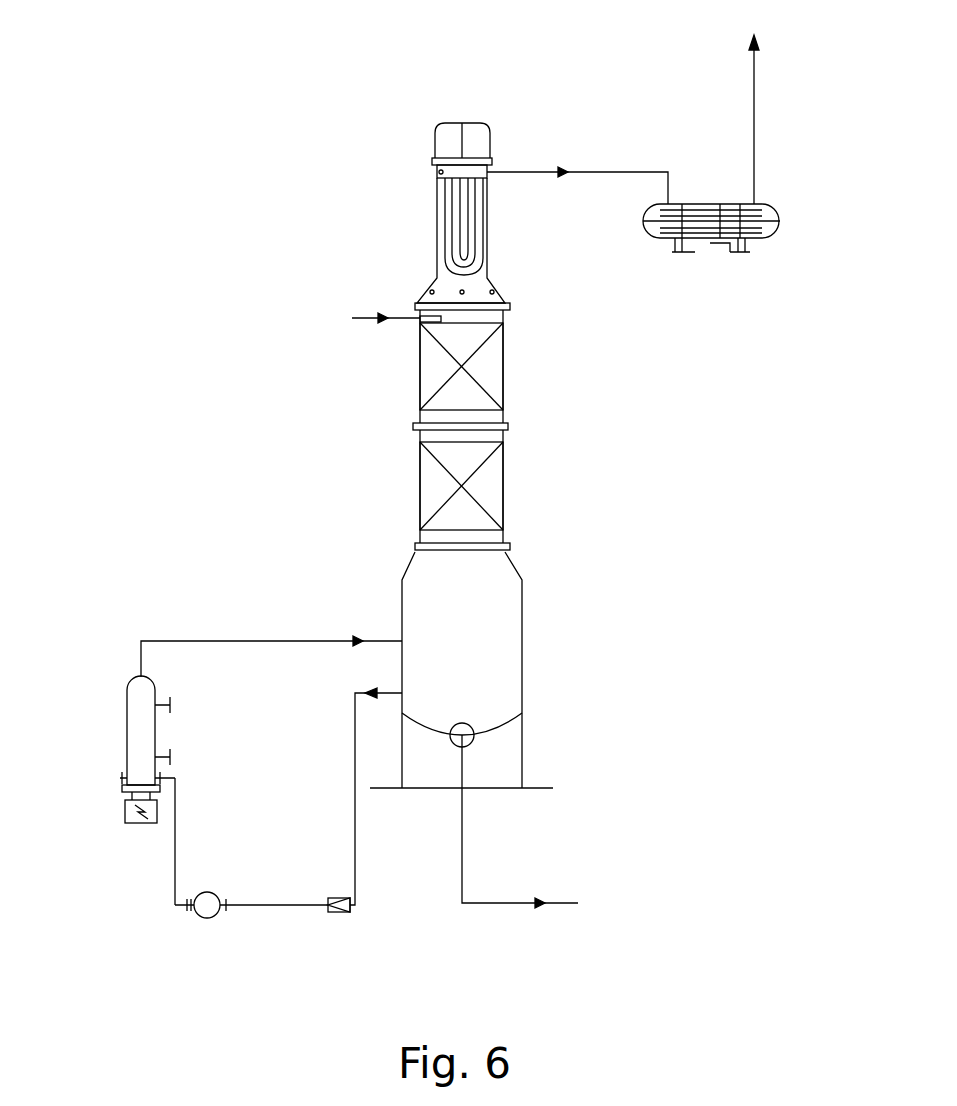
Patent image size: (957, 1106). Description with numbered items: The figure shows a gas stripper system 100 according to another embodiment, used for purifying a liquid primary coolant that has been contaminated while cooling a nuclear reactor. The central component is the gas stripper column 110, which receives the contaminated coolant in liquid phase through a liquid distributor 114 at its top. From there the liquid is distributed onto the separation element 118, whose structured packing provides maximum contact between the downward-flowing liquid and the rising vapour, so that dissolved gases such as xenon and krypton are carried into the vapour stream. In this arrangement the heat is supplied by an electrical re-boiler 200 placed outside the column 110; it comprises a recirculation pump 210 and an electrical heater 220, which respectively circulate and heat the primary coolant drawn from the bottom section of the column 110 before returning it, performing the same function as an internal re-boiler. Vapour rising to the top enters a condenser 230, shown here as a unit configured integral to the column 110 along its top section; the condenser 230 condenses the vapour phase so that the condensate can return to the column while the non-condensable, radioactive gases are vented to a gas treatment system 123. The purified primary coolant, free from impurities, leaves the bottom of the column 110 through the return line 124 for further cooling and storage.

The gas stripper system 100 is at (765, 92).
The gas stripper column 110 is at (377, 497).
The liquid distributor 114 is at (417, 312).
The separation element 118 is at (503, 630).
The gas treatment system 123 is at (755, 107).
The return line 124 is at (545, 826).
The electrical re-boiler 200 is at (137, 630).
The recirculation pump 210 is at (207, 918).
The electrical heater 220 is at (138, 745).
The condenser 230 is at (443, 205).